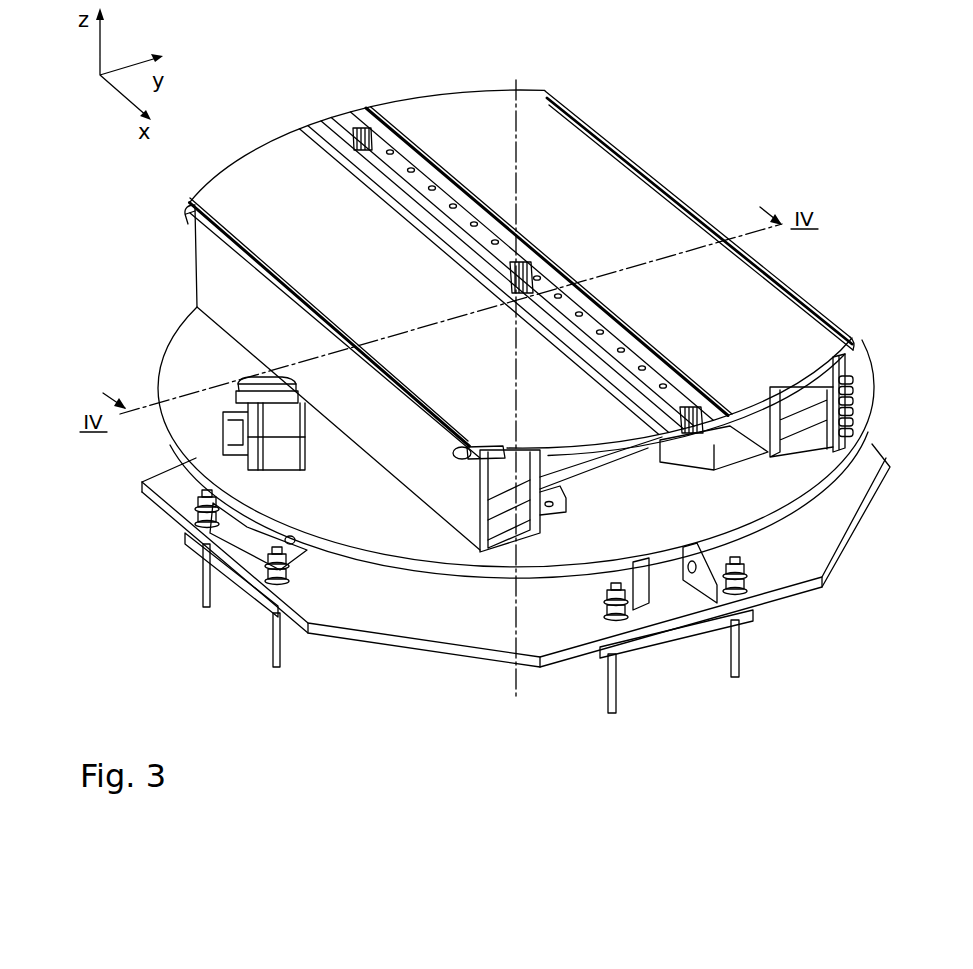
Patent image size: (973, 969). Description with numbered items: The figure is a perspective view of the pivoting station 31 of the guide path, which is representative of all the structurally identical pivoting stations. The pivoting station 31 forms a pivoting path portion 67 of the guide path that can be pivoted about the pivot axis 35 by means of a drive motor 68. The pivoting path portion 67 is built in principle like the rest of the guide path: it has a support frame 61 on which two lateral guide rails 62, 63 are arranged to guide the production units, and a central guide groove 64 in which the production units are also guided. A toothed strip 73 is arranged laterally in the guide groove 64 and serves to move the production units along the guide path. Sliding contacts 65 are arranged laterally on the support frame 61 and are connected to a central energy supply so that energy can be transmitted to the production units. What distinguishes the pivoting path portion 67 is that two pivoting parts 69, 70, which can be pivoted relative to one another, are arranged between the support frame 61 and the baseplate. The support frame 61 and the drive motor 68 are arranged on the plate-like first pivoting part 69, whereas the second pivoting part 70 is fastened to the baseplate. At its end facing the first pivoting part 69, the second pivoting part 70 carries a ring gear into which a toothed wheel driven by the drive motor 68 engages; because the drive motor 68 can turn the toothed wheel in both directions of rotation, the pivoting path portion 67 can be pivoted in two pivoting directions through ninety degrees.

The pivoting station 31 is at (436, 90).
The pivot axis 35 is at (517, 121).
The support frame 61 is at (213, 287).
The lateral guide rail 62 is at (183, 221).
The lateral guide rail 63 is at (836, 356).
The central guide groove 64 is at (345, 145).
The sliding contacts 65 is at (855, 388).
The pivoting path portion 67 is at (598, 173).
The drive motor 68 is at (277, 451).
The first pivoting part 69 is at (178, 366).
The second pivoting part 70 is at (178, 500).
The toothed strip 73 is at (361, 128).